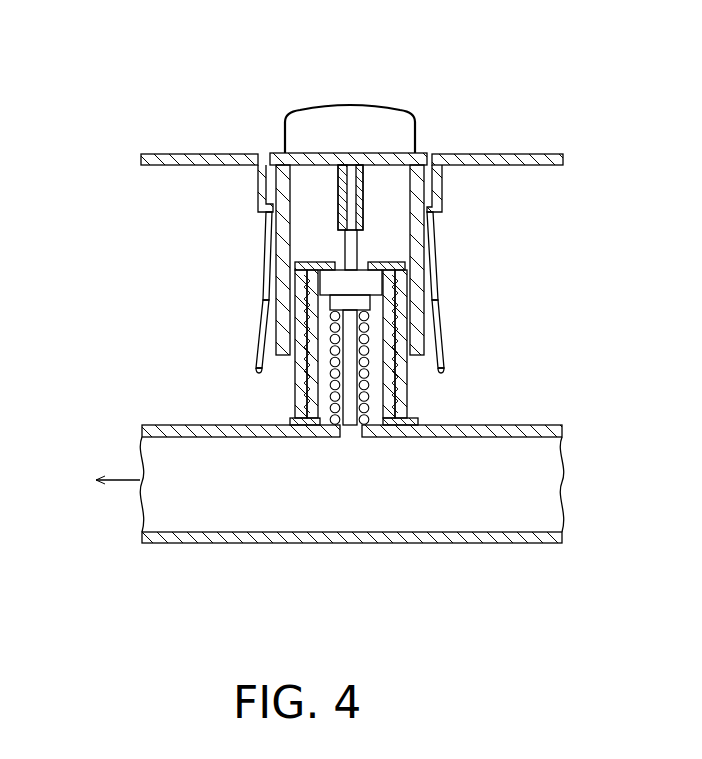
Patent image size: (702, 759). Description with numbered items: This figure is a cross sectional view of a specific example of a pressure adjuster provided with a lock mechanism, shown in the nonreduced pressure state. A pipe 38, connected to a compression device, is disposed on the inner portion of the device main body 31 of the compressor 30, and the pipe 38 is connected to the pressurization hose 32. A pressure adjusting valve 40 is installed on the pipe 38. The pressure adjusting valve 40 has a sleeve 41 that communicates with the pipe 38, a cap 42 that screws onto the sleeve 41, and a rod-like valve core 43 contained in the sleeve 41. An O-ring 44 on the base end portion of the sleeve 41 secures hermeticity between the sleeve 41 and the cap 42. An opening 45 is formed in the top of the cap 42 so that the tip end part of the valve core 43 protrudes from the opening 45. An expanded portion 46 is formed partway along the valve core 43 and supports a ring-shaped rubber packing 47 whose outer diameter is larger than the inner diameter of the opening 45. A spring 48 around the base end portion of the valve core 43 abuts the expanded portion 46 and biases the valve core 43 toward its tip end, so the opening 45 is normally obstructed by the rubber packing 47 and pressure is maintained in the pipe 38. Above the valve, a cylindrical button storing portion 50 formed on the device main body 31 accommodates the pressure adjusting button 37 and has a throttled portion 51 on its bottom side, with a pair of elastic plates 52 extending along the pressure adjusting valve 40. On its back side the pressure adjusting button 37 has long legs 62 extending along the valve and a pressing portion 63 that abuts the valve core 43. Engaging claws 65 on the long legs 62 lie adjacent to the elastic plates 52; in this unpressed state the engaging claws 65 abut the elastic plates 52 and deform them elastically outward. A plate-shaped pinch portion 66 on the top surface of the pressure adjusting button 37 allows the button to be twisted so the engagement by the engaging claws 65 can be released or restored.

The compressor 30 is at (162, 150).
The device main body 31 is at (211, 153).
The pressurization hose 32 is at (94, 482).
The pressure adjusting button 37 is at (372, 153).
The pipe 38 is at (273, 545).
The pressure adjusting valve 40 is at (420, 393).
The sleeve 41 is at (401, 403).
The cap 42 is at (408, 390).
The valve core 43 is at (424, 246).
The O-ring 44 is at (292, 424).
The opening 45 is at (416, 268).
The expanded portion 46 is at (433, 321).
The rubber packing 47 is at (409, 289).
The spring 48 is at (298, 404).
The button storing portion 50 is at (442, 176).
The throttled portion 51 is at (441, 210).
The elastic plates 52 is at (262, 288).
The long legs 62 is at (417, 148).
The pressing portion 63 is at (342, 205).
The engaging claws 65 is at (262, 338).
The pinch portion 66 is at (345, 118).